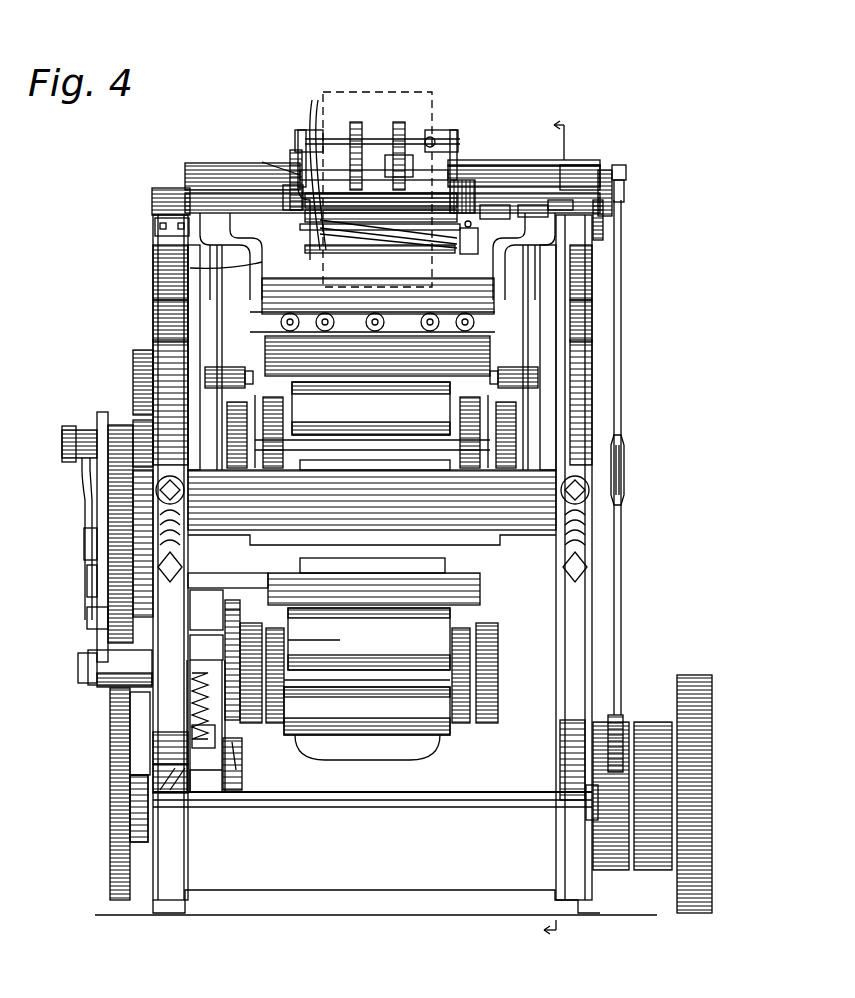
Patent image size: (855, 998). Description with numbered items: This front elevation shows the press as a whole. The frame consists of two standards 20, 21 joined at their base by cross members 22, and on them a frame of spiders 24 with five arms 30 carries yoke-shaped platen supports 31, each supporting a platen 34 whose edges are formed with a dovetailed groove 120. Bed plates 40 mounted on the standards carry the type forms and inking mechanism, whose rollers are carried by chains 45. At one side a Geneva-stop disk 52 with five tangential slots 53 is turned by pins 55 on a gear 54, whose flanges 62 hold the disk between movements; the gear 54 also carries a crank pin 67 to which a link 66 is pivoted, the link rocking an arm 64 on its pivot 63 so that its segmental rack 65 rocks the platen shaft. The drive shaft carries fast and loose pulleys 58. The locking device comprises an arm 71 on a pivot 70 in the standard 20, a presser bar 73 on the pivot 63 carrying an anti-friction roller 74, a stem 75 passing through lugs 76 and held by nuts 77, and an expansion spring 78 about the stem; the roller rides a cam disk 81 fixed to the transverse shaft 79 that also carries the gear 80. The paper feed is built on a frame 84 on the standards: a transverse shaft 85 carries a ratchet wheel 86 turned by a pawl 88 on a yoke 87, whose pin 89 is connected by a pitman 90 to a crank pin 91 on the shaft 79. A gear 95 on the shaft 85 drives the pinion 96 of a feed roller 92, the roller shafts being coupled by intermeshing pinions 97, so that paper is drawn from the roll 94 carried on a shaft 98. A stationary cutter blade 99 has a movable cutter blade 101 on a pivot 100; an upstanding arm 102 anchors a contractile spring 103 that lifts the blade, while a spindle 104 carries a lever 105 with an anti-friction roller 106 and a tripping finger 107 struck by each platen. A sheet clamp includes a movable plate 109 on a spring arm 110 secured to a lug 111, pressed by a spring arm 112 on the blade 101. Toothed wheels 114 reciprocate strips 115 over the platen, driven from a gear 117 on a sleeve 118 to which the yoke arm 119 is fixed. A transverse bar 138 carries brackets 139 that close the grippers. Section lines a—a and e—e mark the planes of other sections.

The standard 20 is at (132, 710).
The standard 21 is at (592, 625).
The cross members 22 is at (376, 853).
The spiders 24 is at (205, 440).
The arms 30 is at (156, 322).
The platen supports 31 is at (156, 300).
The platen 34 is at (352, 318).
The bed plates 40 is at (450, 748).
The chains 45 is at (262, 472).
The Geneva-stop disk 52 is at (135, 385).
The slots 53 is at (140, 350).
The gear 54 is at (110, 590).
The pins 55 is at (85, 572).
The fast and loose pulleys 58 is at (655, 850).
The flanges 62 is at (108, 616).
The pivot 63 is at (100, 682).
The arm 64 is at (84, 540).
The segmental rack 65 is at (97, 418).
The link 66 is at (85, 478).
The crank pin 67 is at (80, 652).
The pivot 70 is at (205, 605).
The arm 71 is at (215, 630).
The presser bar 73 is at (205, 760).
The anti-friction roller 74 is at (228, 760).
The stem 75 is at (195, 737).
The lugs 76 is at (178, 752).
The nuts 77 is at (180, 775).
The expansion spring 78 is at (200, 700).
The transverse shaft 79 is at (590, 800).
The gear 80 is at (122, 825).
The cam disk 81 is at (236, 782).
The frame 84 is at (470, 175).
The transverse shaft 85 is at (530, 195).
The ratchet wheel 86 is at (605, 222).
The yoke 87 is at (580, 170).
The pawl 88 is at (604, 170).
The pin 89 is at (622, 165).
The pitman 90 is at (623, 385).
The crank pin 91 is at (618, 740).
The feed roller 92 is at (418, 200).
The roll of paper 94 is at (356, 122).
The gear 95 is at (292, 160).
The pinion 96 is at (377, 256).
The intermeshing pinions 97 is at (318, 232).
The shaft 98 is at (425, 135).
The stationary cutter blade 99 is at (370, 236).
The pivot 100 is at (410, 252).
The cutter blade 101 is at (399, 122).
The upstanding arm 102 is at (285, 195).
The contractile spring 103 is at (302, 130).
The spindle 104 is at (478, 245).
The lever 105 is at (305, 130).
The anti-friction roller 106 is at (366, 132).
The tripping finger 107 is at (156, 290).
The movable plate 109 is at (377, 356).
The spring arm 110 is at (425, 330).
The lug 111 is at (462, 332).
The spring arm 112 is at (381, 191).
The toothed wheels 114 is at (362, 612).
The strips 115 is at (404, 150).
The gear 117 is at (462, 165).
The sleeve 118 is at (495, 190).
The arm 119 is at (562, 165).
The dovetailed groove 120 is at (362, 372).
The bar 138 is at (170, 280).
The brackets 139 is at (205, 250).
The section line a— a is at (554, 524).
The section line e— e is at (367, 720).